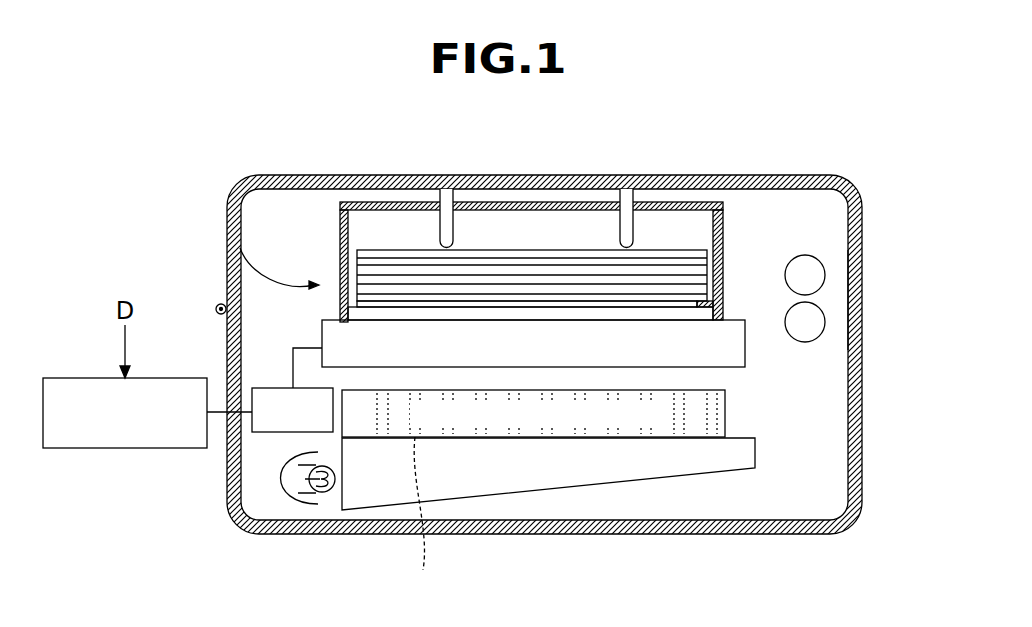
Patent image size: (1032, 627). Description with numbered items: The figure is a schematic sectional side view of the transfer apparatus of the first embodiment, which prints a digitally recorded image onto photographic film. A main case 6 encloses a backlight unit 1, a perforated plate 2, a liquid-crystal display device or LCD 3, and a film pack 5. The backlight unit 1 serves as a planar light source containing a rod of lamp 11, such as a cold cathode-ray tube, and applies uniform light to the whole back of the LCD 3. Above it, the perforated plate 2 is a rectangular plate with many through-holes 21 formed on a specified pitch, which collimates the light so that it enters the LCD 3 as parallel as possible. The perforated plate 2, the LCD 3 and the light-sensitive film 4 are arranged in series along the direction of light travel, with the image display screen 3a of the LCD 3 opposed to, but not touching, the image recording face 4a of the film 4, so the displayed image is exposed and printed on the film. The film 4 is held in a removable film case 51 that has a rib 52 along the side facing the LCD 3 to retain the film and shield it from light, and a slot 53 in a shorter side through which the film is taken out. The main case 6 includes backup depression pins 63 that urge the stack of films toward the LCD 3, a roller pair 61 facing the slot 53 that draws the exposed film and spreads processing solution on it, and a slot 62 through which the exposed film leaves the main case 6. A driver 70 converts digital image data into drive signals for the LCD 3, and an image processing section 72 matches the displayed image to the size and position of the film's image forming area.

The backlight unit 1 is at (583, 477).
The perforated plate 2 is at (727, 428).
The liquid-crystal display device (LCD) 3 is at (747, 350).
The image display screen 3a is at (583, 320).
The light-sensitive film 4 is at (393, 297).
The image recording face 4a is at (540, 303).
The film pack 5 is at (229, 245).
The main case 6 is at (300, 175).
The rod of lamp 11 is at (293, 500).
The through-holes 21 is at (422, 517).
The film case 51 is at (727, 218).
The rib 52 is at (707, 303).
The slot 53 is at (727, 293).
The roller pair 61 is at (808, 263).
The slot 62 is at (860, 300).
The backup depression pins 63 is at (450, 226).
The driver 70 is at (265, 433).
The image processing section 72 is at (63, 448).